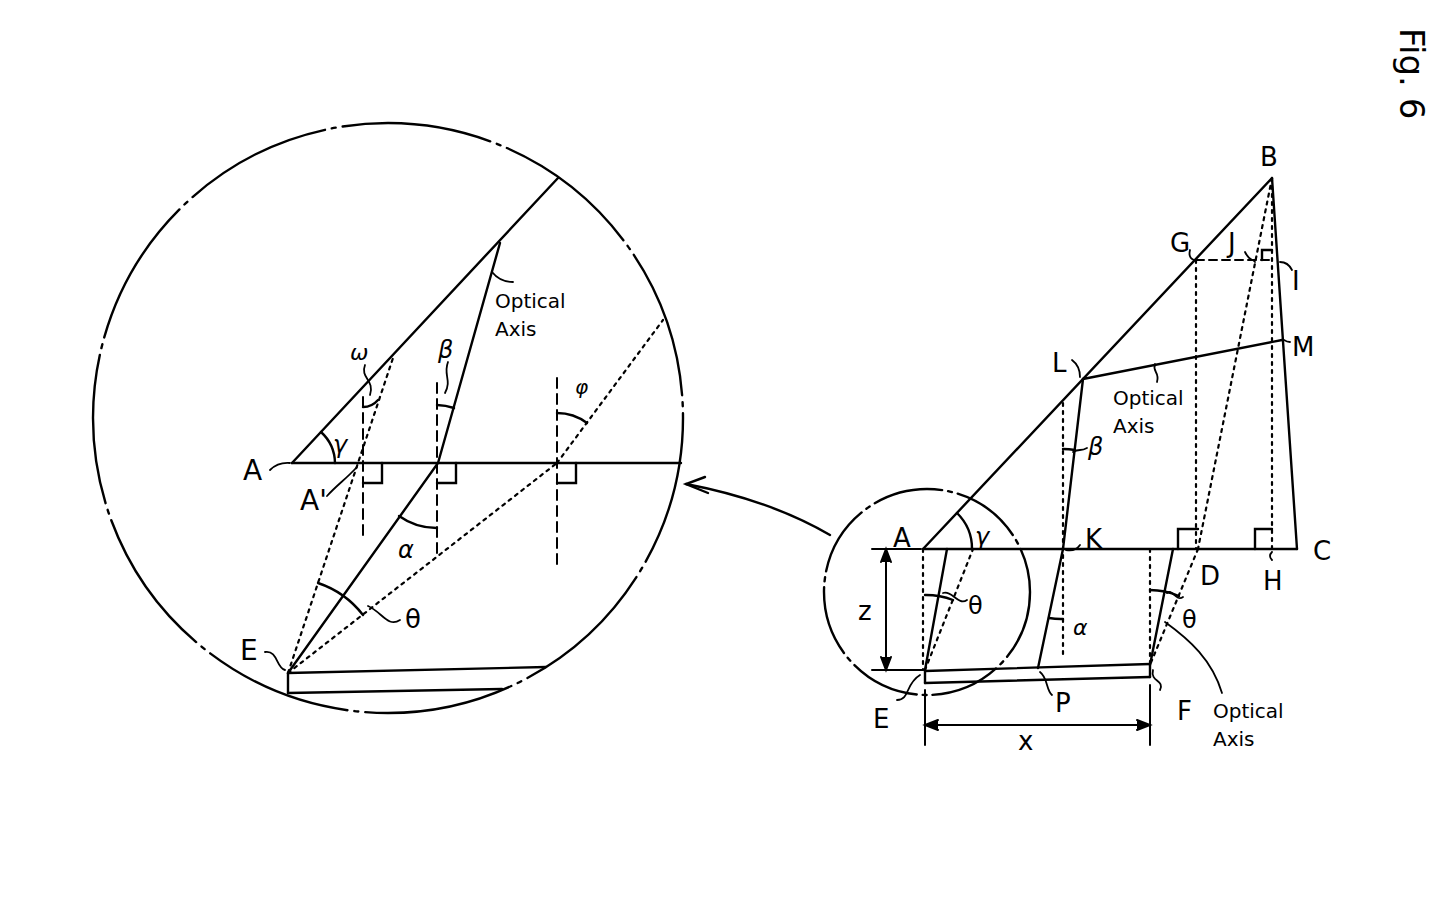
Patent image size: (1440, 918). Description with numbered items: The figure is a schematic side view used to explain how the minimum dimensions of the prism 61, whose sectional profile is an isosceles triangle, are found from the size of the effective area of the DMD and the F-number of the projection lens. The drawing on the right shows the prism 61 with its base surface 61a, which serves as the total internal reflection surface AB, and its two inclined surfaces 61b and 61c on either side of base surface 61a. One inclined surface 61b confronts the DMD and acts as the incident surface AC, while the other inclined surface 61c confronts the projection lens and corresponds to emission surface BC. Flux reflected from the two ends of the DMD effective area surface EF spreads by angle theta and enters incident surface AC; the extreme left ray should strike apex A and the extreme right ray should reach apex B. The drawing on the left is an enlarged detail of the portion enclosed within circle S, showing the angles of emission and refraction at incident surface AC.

The prism 61 is at (828, 425).
The base surface 61a is at (1116, 341).
The inclined surface 61b is at (1238, 552).
The inclined surface 61c is at (1291, 450).
The circle S is at (513, 148).